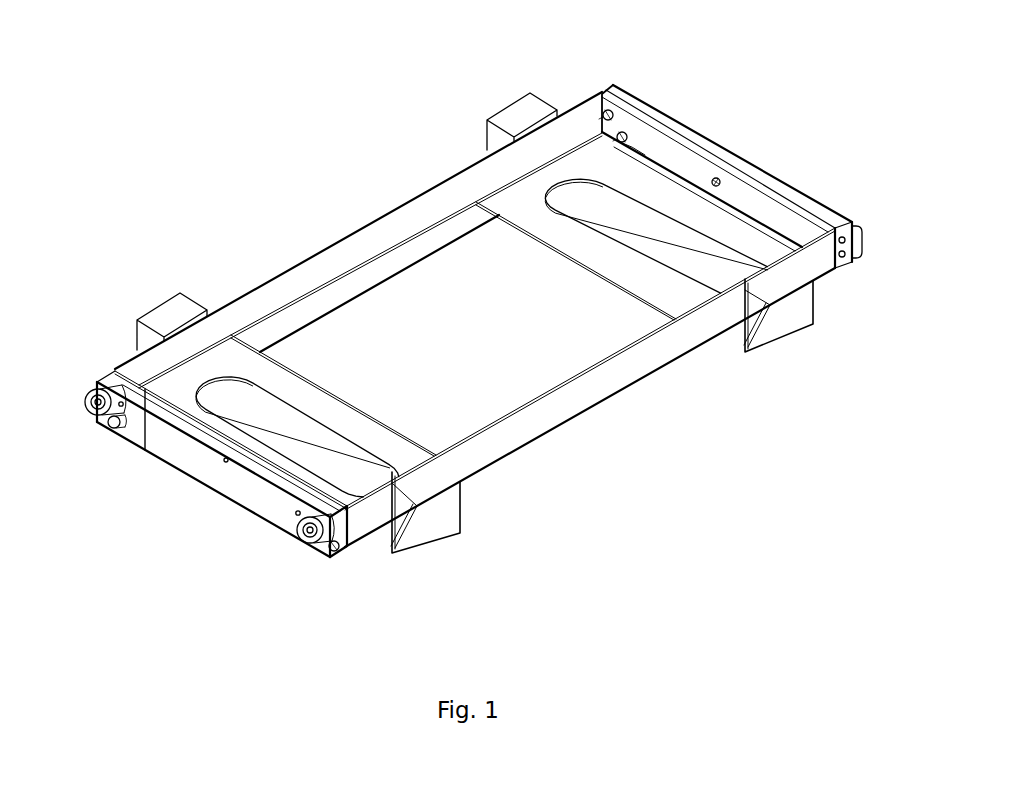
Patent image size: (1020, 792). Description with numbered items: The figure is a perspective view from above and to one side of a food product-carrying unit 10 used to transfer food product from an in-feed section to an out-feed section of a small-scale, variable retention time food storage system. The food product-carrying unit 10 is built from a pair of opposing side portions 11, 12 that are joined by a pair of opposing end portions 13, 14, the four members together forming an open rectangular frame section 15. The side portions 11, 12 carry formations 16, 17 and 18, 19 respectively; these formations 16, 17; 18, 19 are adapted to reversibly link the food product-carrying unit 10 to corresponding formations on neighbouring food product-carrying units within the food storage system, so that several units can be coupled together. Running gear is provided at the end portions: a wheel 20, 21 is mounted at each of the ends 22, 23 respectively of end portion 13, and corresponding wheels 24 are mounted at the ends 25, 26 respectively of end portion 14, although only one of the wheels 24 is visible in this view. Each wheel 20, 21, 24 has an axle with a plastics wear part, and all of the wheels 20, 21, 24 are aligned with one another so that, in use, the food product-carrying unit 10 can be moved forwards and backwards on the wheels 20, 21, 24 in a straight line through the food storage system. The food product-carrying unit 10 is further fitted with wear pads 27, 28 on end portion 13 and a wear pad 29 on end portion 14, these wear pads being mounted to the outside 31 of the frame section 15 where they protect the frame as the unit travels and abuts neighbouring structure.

The food product-carrying unit 10 is at (256, 118).
The side portion 11 is at (575, 400).
The side portion 12 is at (362, 250).
The end portion 13 is at (215, 461).
The end portion 14 is at (718, 149).
The open rectangular frame section 15 is at (278, 290).
The formation 16 is at (430, 519).
The formation 17 is at (773, 328).
The formation 18 is at (152, 298).
The formation 19 is at (505, 108).
The wheel 20 is at (310, 545).
The wheel 21 is at (115, 432).
The end of end portion 22 is at (317, 544).
The end of end portion 23 is at (103, 428).
The wheel 24 is at (860, 252).
The end of end portion 25 is at (842, 263).
The end of end portion 26 is at (614, 84).
The wear pad 27 is at (295, 512).
The wear pad 28 is at (90, 395).
The wear pad 29 is at (862, 234).
The outside of the frame section 31 is at (119, 400).